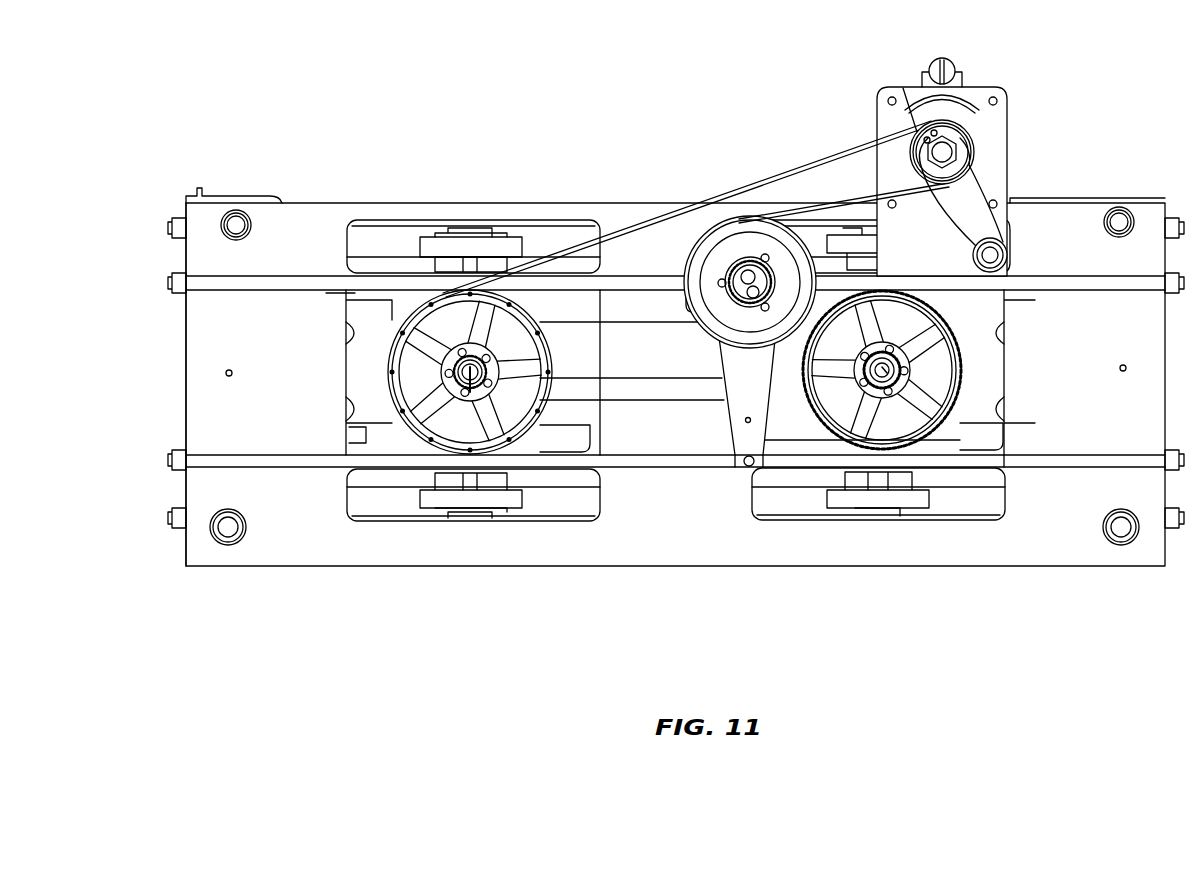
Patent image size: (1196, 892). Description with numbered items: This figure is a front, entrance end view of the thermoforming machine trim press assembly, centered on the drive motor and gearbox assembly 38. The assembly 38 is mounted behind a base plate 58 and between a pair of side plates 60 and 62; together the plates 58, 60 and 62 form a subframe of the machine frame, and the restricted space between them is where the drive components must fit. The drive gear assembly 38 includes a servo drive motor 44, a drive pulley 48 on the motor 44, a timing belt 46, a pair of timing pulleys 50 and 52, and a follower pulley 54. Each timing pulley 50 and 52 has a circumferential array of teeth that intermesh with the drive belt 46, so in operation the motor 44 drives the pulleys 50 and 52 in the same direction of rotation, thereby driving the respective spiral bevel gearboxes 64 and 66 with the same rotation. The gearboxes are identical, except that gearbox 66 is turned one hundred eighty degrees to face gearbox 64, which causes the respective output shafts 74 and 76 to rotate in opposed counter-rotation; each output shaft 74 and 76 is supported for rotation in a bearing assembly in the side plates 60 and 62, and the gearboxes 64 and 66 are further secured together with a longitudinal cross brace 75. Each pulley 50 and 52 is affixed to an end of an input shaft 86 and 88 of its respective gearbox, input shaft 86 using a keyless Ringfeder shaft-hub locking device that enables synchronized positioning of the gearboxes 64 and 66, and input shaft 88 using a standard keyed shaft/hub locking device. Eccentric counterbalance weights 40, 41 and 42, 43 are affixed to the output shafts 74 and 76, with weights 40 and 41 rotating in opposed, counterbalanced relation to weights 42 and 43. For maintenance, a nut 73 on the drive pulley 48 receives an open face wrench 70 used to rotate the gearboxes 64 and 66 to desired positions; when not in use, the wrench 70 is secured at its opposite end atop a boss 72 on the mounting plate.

The drive motor and gearbox assembly 38 is at (630, 592).
The eccentric counterbalance weight 40 is at (988, 433).
The eccentric counterbalance weight 41 is at (1008, 303).
The eccentric counterbalance weight 42 is at (357, 448).
The eccentric counterbalance weight 43 is at (360, 303).
The servo drive motor 44 is at (938, 105).
The timing belt 46 is at (780, 185).
The drive pulley 48 is at (920, 96).
The timing pulley 50 is at (827, 427).
The timing pulley 52 is at (548, 356).
The follower pulley 54 is at (713, 242).
The base plate 58 is at (286, 512).
The side plate 60 is at (220, 290).
The side plate 62 is at (221, 457).
The spiral bevel gearbox 64 is at (1007, 372).
The spiral bevel gearbox 66 is at (344, 382).
The open face wrench 70 is at (967, 203).
The boss 72 is at (1000, 240).
The nut 73 is at (940, 140).
The output shaft 74 is at (830, 470).
The longitudinal cross brace 75 is at (607, 403).
The output shaft 76 is at (432, 269).
The input shaft 86 is at (928, 283).
The input shaft 88 is at (485, 382).